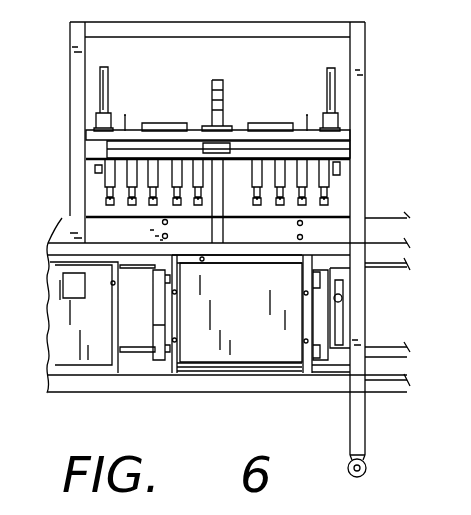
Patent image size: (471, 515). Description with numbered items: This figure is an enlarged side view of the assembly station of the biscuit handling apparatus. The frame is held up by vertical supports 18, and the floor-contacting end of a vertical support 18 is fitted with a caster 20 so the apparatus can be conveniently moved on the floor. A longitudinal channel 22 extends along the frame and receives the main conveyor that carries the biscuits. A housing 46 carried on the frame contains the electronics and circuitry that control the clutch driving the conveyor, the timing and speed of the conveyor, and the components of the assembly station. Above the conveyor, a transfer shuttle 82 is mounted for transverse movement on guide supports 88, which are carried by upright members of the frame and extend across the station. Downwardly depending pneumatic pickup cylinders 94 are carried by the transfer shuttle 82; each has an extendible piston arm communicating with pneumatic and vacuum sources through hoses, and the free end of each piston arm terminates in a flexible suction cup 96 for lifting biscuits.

The vertical support 18 is at (366, 318).
The caster 20 is at (366, 467).
The longitudinal channel 22 is at (92, 231).
The housing 46 is at (262, 322).
The transfer shuttle 82 is at (85, 131).
The guide support 88 is at (232, 143).
The pneumatic pickup cylinder 94 is at (104, 157).
The flexible suction cup 96 is at (104, 201).